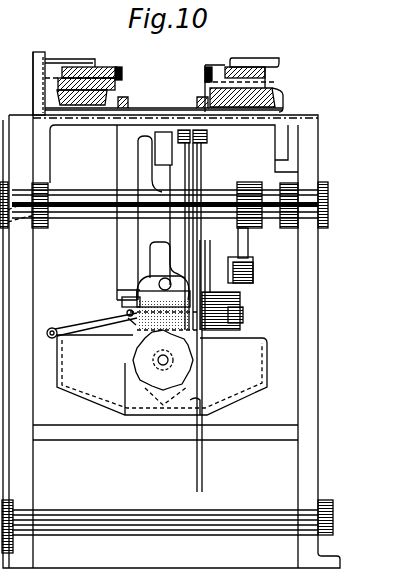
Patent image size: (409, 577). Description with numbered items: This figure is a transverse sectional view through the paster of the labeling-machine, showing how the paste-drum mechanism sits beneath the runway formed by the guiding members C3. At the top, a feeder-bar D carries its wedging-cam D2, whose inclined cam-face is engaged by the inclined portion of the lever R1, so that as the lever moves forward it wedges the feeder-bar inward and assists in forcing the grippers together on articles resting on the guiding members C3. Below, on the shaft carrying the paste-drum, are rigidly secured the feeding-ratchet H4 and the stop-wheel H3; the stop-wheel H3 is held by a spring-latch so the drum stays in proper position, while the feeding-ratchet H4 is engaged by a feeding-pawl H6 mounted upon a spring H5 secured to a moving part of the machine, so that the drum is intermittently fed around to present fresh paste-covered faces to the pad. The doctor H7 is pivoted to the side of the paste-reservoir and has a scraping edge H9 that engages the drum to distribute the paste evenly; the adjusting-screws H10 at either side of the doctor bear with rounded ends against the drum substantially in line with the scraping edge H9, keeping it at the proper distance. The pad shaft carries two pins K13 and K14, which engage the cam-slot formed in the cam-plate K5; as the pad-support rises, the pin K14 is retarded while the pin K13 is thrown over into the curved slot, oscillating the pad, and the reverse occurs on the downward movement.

The lever R1 is at (37, 76).
The wedging-cam D2 is at (50, 58).
The feeder-bar D is at (100, 68).
The guiding member C3 is at (195, 99).
The cam-plate K5 is at (120, 149).
The pin K13 is at (128, 279).
The pin K14 is at (180, 277).
The spring H5 is at (197, 266).
The doctor H7 is at (80, 327).
The adjusting-screw H10 is at (127, 314).
The scraping edge H9 is at (130, 320).
The stop-wheel H3 is at (132, 322).
The feeding-ratchet H4 is at (150, 372).
The feeding-pawl H6 is at (200, 405).